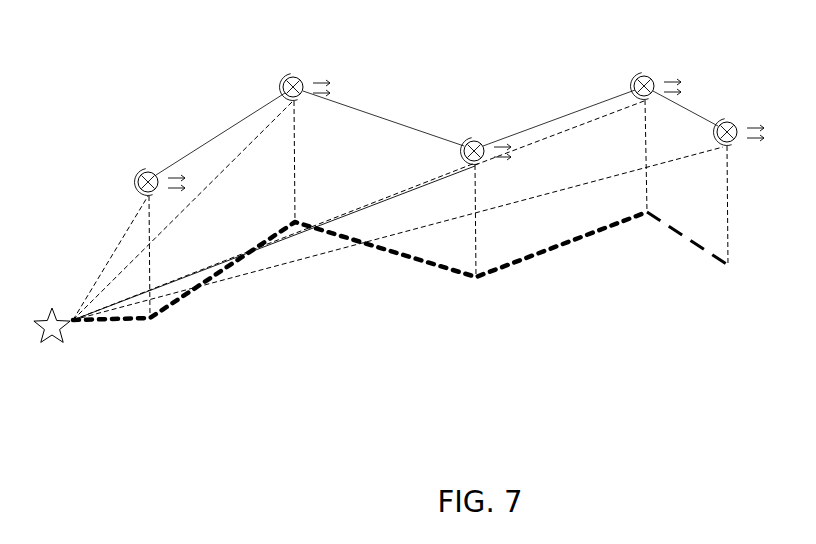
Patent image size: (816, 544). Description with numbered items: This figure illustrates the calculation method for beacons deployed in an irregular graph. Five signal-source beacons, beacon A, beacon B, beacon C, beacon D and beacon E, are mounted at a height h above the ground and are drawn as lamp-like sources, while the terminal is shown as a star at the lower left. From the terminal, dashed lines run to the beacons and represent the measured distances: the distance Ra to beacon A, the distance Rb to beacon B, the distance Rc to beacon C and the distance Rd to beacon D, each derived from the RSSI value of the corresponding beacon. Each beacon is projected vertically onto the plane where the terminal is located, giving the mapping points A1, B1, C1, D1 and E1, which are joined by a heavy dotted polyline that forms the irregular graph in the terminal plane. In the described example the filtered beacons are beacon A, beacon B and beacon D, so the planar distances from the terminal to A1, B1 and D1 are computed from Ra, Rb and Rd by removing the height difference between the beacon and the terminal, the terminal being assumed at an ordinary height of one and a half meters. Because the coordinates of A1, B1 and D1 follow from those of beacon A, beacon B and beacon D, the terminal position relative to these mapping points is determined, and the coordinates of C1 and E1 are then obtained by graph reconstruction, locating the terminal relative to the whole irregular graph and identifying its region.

The beacon A is at (160, 158).
The beacon B is at (305, 63).
The beacon C is at (486, 126).
The beacon D is at (656, 62).
The beacon E is at (739, 105).
The mapping point of beacon A A1 is at (137, 281).
The mapping point of beacon B B1 is at (293, 193).
The mapping point of beacon C C1 is at (468, 241).
The mapping point of beacon D D1 is at (645, 193).
The mapping point of beacon E E1 is at (737, 229).
The distance from terminal to beacon A Ra is at (109, 258).
The distance from terminal to beacon B Rb is at (183, 210).
The distance from terminal to beacon C Rc is at (274, 234).
The distance from terminal to beacon D Rd is at (559, 144).